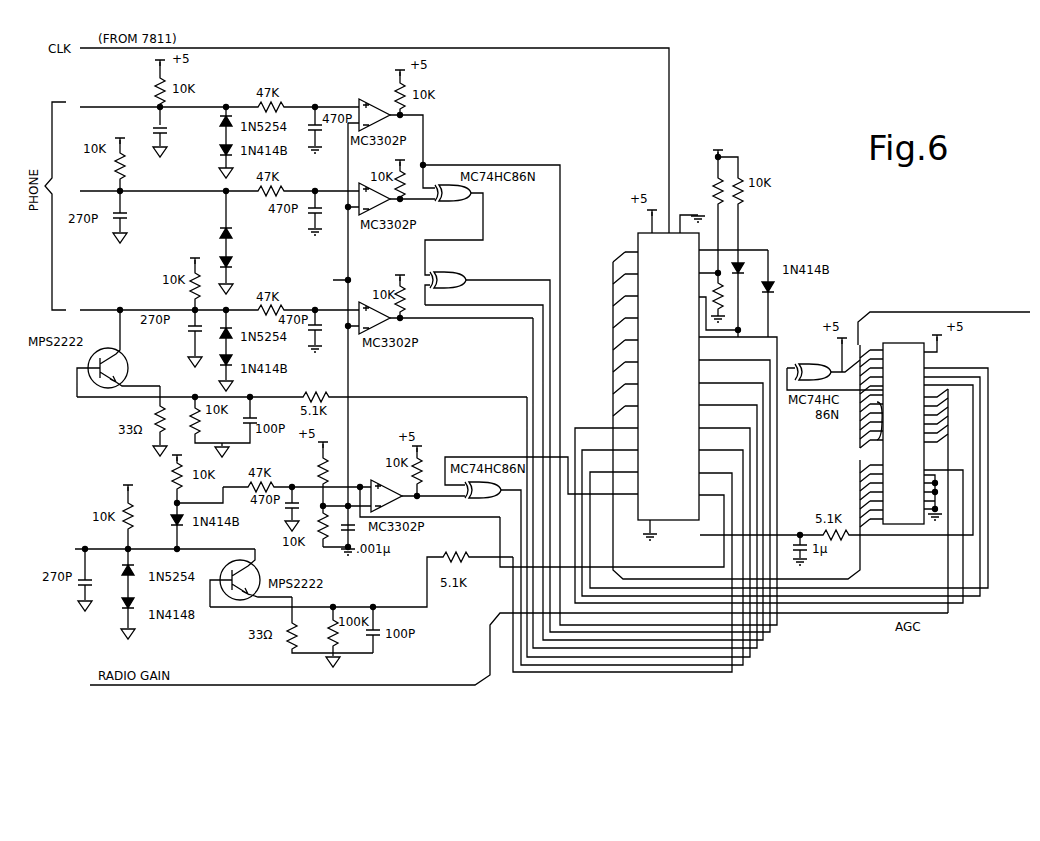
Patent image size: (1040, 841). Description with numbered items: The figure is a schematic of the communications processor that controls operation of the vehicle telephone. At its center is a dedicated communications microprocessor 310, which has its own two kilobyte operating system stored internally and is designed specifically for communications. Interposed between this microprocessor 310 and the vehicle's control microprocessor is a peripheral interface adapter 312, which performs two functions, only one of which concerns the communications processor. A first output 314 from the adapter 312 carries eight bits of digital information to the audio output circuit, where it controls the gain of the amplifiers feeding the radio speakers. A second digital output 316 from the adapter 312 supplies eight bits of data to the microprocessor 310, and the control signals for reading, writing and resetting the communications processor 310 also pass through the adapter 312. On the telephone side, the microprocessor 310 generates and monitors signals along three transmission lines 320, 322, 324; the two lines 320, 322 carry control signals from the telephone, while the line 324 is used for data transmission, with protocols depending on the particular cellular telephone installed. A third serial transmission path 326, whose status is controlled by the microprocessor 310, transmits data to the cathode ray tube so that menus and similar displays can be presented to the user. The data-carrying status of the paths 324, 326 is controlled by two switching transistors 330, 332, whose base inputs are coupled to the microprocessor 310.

The communications microprocessor 310 is at (678, 232).
The peripheral interface adapter 312 is at (918, 362).
The first output 314 is at (846, 617).
The second digital output 316 is at (860, 556).
The transmission line 320 is at (85, 107).
The transmission line 322 is at (140, 193).
The transmission line 324 is at (88, 310).
The third serial transmission path 326 is at (100, 549).
The switching transistor 330 is at (265, 567).
The switching transistor 332 is at (101, 392).